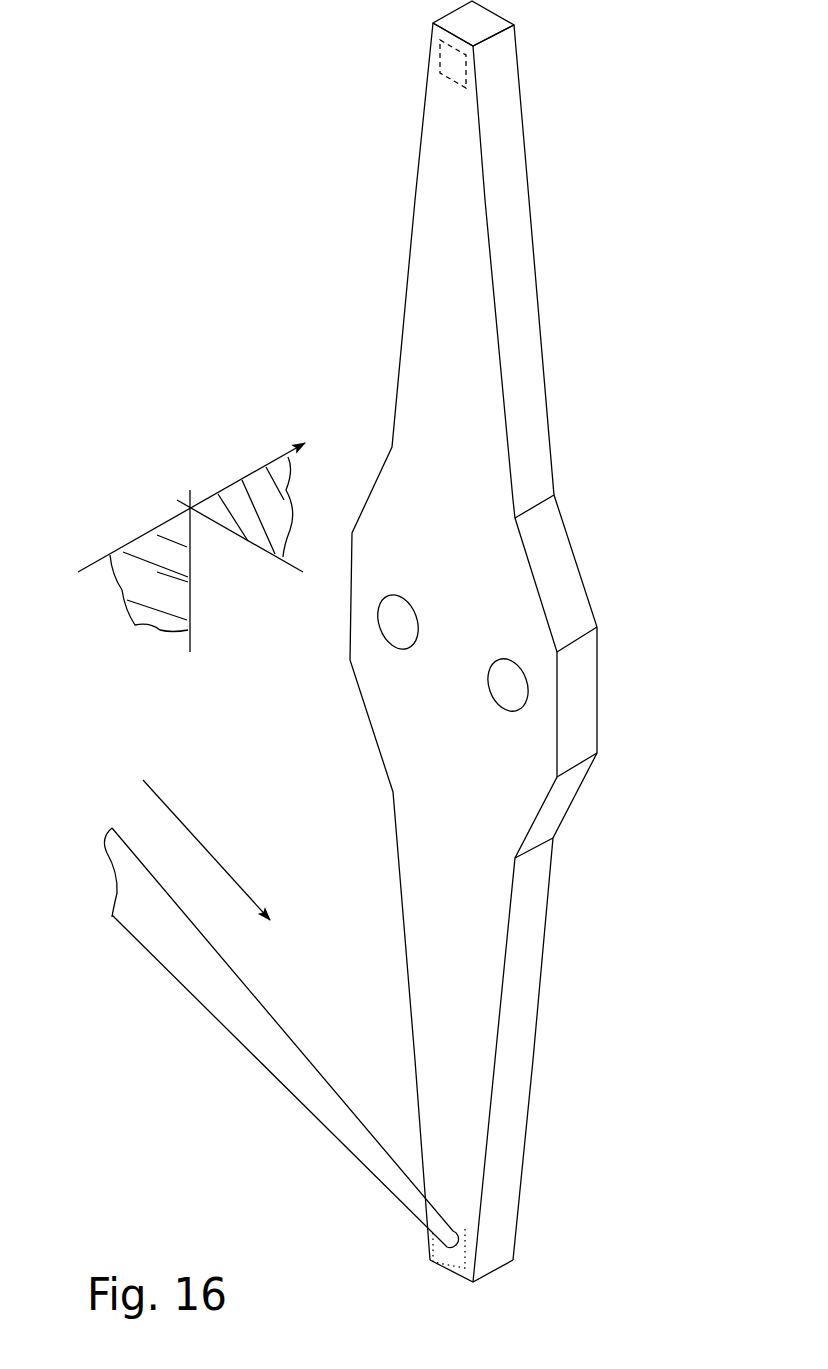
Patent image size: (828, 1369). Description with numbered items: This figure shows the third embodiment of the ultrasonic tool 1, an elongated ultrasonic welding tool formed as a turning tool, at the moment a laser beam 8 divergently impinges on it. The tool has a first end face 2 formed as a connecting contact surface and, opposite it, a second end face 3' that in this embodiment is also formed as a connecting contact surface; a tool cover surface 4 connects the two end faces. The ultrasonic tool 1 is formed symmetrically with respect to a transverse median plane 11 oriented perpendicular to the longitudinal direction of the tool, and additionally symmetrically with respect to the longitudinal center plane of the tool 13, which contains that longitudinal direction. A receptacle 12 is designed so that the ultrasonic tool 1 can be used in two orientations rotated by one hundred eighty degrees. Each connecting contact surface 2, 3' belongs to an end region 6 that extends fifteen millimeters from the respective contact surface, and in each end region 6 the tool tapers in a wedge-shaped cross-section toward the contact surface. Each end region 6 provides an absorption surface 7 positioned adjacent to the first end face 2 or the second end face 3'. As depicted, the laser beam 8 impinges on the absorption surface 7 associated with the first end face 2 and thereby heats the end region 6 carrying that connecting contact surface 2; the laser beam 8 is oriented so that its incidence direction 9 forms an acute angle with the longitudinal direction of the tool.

The ultrasonic tool 1 is at (153, 403).
The first end face 2 is at (496, 1285).
The second end face 3' is at (518, 55).
The tool cover surface 4 is at (465, 313).
The end region 6 is at (366, 238).
The absorption surface 7 is at (460, 67).
The laser beam 8 is at (187, 963).
The incidence direction 9 is at (197, 838).
The transverse median plane 11 is at (250, 517).
The receptacle 12 is at (492, 627).
The longitudinal center plane of the tool 13 is at (193, 592).